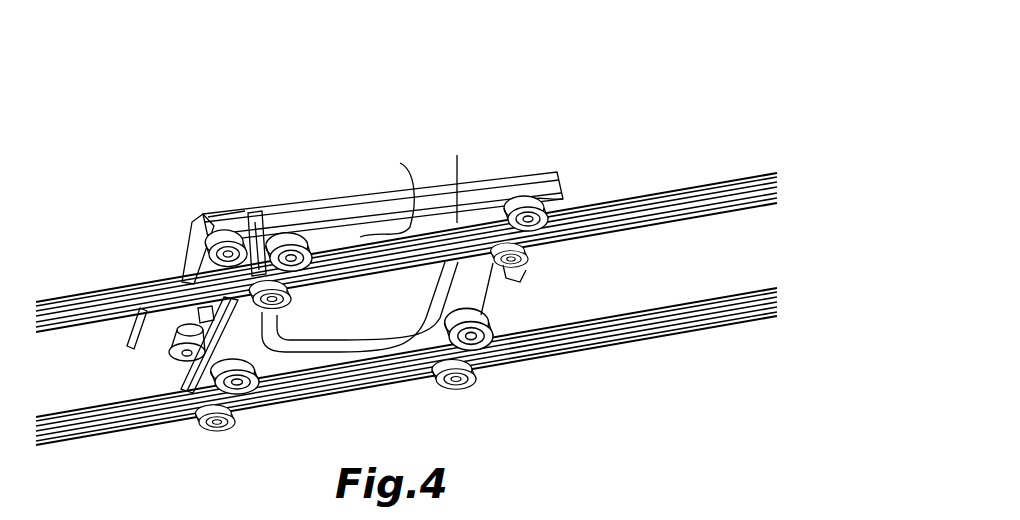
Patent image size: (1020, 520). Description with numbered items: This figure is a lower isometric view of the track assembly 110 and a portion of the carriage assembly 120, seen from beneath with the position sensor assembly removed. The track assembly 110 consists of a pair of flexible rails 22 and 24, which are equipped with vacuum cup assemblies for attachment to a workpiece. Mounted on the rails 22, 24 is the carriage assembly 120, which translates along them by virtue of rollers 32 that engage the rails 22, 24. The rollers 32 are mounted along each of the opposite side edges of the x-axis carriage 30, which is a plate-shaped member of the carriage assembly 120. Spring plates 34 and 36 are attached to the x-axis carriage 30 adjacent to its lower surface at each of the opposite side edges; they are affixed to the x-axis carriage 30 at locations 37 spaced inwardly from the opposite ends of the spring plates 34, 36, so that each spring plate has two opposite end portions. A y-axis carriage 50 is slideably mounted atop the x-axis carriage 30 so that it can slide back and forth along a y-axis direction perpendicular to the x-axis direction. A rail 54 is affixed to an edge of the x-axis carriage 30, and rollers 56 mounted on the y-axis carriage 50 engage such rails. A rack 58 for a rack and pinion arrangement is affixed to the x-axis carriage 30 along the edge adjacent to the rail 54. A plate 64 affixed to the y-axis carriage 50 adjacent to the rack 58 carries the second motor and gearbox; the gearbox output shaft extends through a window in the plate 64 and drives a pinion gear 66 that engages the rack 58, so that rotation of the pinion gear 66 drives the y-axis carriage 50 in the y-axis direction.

The track assembly 110 is at (784, 132).
The carriage assembly 120 is at (448, 76).
The flexible rail 22 is at (687, 323).
The flexible rail 24 is at (737, 187).
The x-axis carriage 30 is at (481, 187).
The rollers 32 is at (303, 240).
The spring plate 34 is at (388, 347).
The spring plate 36 is at (457, 158).
The locations 37 is at (400, 163).
The y-axis carriage 50 is at (230, 222).
The rail 54 is at (254, 228).
The rollers 56 is at (213, 251).
The rack 58 is at (187, 383).
The plate 64 is at (140, 337).
The pinion gear 66 is at (170, 360).